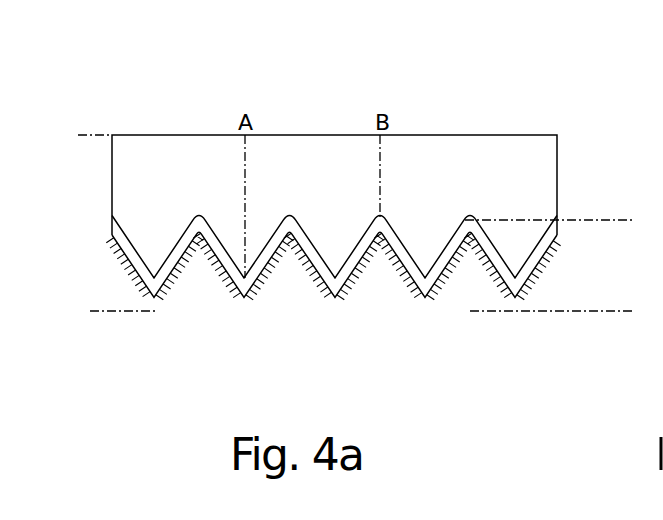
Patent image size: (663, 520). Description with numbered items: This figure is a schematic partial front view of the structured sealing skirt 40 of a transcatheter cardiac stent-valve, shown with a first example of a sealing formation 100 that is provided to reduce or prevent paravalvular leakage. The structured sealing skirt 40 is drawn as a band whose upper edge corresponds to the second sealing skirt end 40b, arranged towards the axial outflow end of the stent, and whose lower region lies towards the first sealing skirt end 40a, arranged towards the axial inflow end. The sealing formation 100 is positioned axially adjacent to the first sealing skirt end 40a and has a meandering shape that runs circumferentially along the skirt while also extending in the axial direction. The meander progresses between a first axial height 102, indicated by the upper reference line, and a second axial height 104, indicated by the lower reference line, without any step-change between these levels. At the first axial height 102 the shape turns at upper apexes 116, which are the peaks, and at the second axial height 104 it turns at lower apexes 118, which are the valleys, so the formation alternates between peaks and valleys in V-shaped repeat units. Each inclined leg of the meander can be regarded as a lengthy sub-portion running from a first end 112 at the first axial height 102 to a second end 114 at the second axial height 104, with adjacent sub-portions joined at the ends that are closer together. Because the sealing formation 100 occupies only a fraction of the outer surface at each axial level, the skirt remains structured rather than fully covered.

The structured sealing skirt 40 is at (334, 169).
The first sealing skirt end 40a is at (122, 312).
The second sealing skirt end 40b is at (98, 135).
The sealing formation 100 is at (333, 242).
The first axial height 102 is at (583, 220).
The second axial height 104 is at (583, 312).
The first end 112 is at (334, 170).
The upper apex 116 is at (470, 218).
The second end 114 is at (334, 317).
The lower apex 118 is at (503, 298).